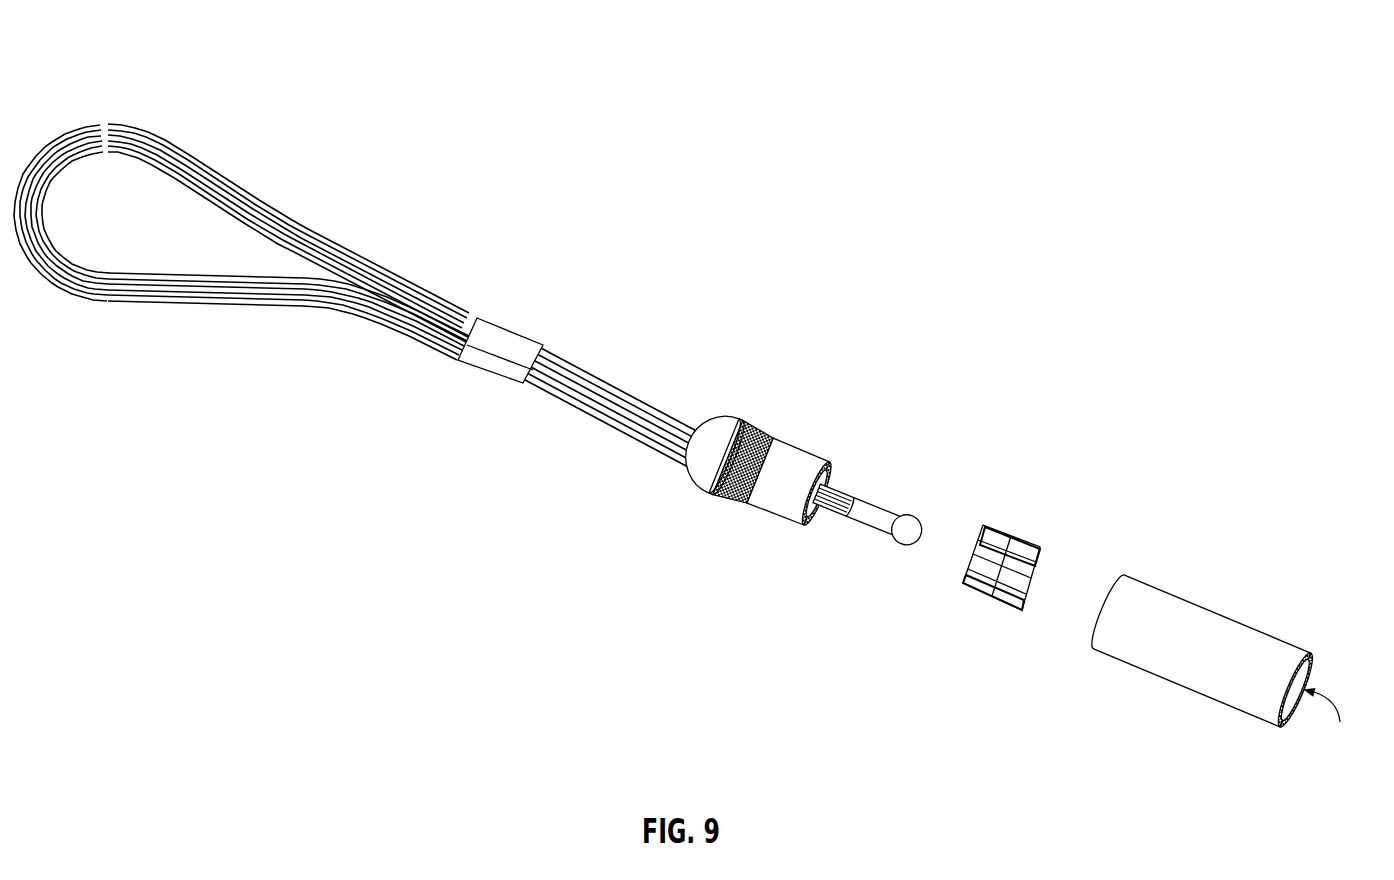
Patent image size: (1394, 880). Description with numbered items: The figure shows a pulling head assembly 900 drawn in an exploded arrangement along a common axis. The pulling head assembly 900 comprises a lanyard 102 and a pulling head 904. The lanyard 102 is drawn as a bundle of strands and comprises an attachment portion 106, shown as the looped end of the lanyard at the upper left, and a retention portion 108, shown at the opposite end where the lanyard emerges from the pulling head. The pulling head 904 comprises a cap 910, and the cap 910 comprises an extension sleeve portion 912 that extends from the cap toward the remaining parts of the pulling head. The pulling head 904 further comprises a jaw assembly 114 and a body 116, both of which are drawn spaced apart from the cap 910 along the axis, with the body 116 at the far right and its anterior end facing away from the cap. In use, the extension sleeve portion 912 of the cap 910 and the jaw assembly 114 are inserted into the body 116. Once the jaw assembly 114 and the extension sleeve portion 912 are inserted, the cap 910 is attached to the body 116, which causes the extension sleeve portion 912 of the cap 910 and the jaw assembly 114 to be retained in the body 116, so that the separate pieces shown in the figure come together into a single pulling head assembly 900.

The pulling head assembly 900 is at (700, 434).
The pulling head 904 is at (914, 525).
The lanyard 102 is at (363, 302).
The attachment portion 106 is at (162, 334).
The cap 910 is at (752, 413).
The extension sleeve portion 912 is at (775, 508).
The retention portion 108 is at (868, 548).
The jaw assembly 114 is at (1025, 520).
The body 116 is at (1213, 628).